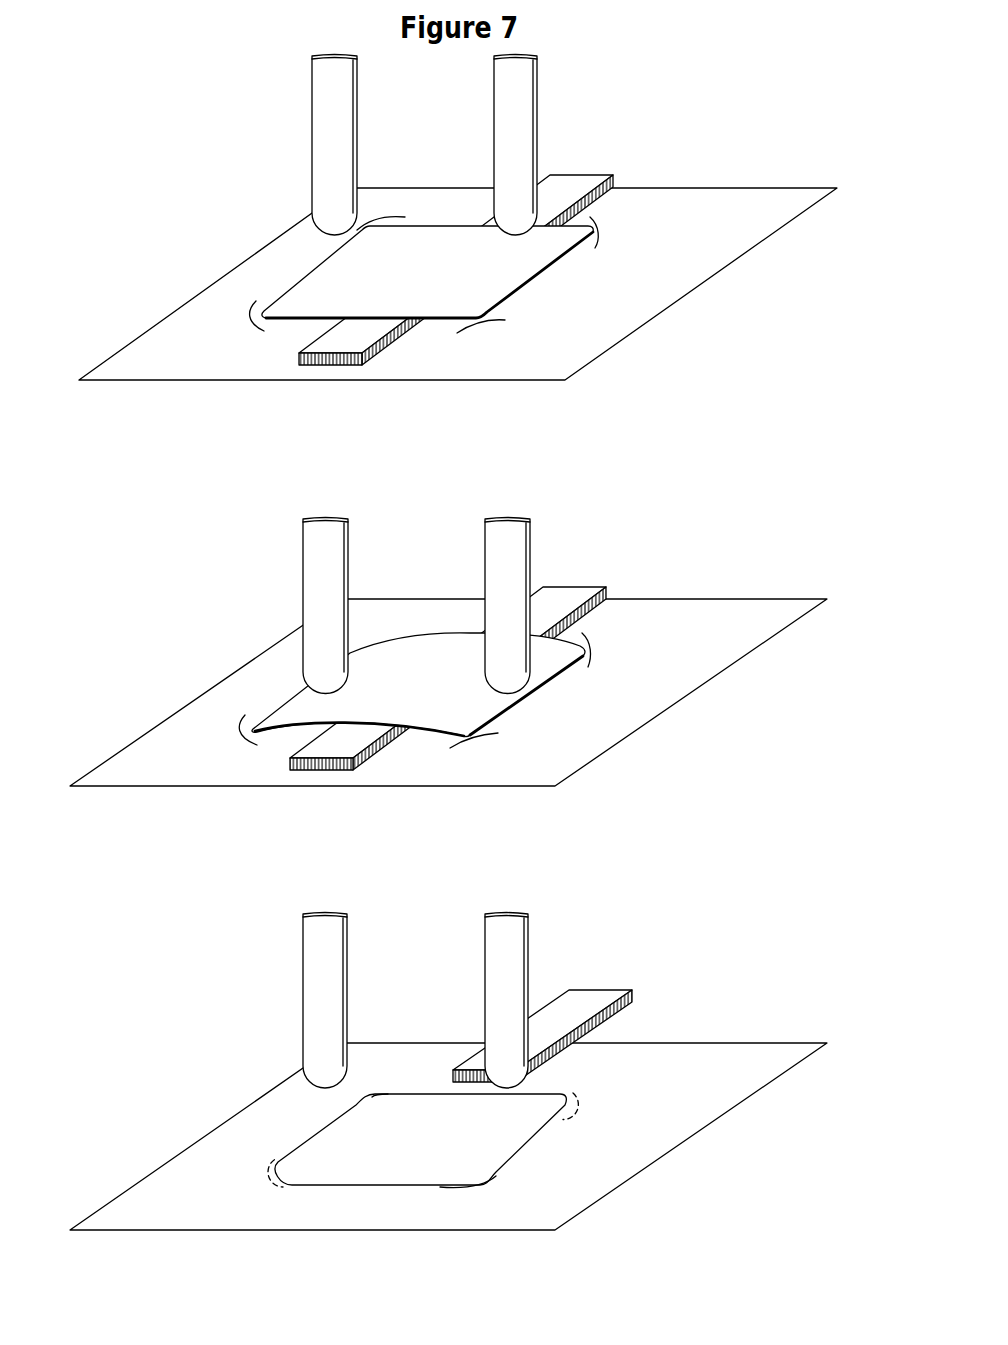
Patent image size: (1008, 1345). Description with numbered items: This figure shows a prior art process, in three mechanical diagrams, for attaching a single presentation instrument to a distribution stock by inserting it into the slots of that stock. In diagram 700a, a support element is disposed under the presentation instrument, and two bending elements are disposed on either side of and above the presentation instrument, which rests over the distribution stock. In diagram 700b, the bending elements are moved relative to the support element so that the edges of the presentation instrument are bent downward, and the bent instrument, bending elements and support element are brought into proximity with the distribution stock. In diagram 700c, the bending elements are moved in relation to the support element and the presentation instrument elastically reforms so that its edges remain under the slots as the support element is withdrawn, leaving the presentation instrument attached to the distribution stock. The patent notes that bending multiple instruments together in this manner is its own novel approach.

The diagram 700a is at (458, 218).
The diagram 700b is at (448, 647).
The diagram 700c is at (448, 1072).